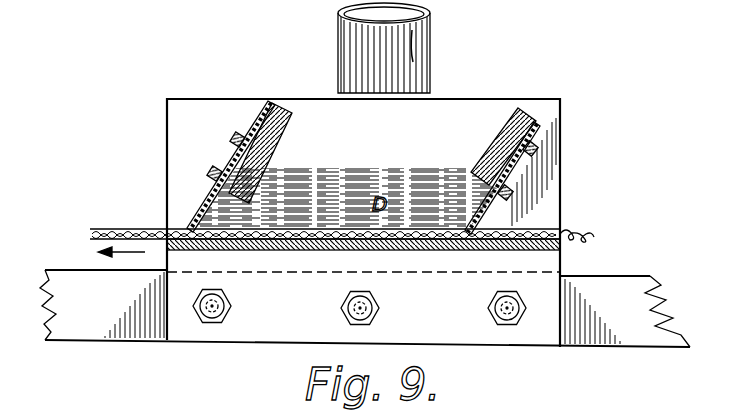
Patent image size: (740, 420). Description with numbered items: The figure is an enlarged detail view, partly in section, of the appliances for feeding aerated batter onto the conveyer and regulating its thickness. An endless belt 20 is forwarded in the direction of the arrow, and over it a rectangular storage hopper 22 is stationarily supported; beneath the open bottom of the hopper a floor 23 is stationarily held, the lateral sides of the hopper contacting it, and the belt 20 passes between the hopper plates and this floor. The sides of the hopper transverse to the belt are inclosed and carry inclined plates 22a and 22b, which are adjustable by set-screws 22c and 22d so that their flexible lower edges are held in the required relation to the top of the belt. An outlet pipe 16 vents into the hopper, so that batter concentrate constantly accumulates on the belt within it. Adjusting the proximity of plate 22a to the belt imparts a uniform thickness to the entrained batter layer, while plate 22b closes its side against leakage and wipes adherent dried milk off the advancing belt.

The outlet pipe 16 is at (430, 63).
The belt 20 is at (331, 220).
The storage hopper 22 is at (345, 174).
The inclined plate 22a is at (198, 212).
The inclined plate 22b is at (541, 212).
The set-screw 22c is at (212, 170).
The set-screw 22d is at (540, 183).
The floor 23 is at (452, 251).